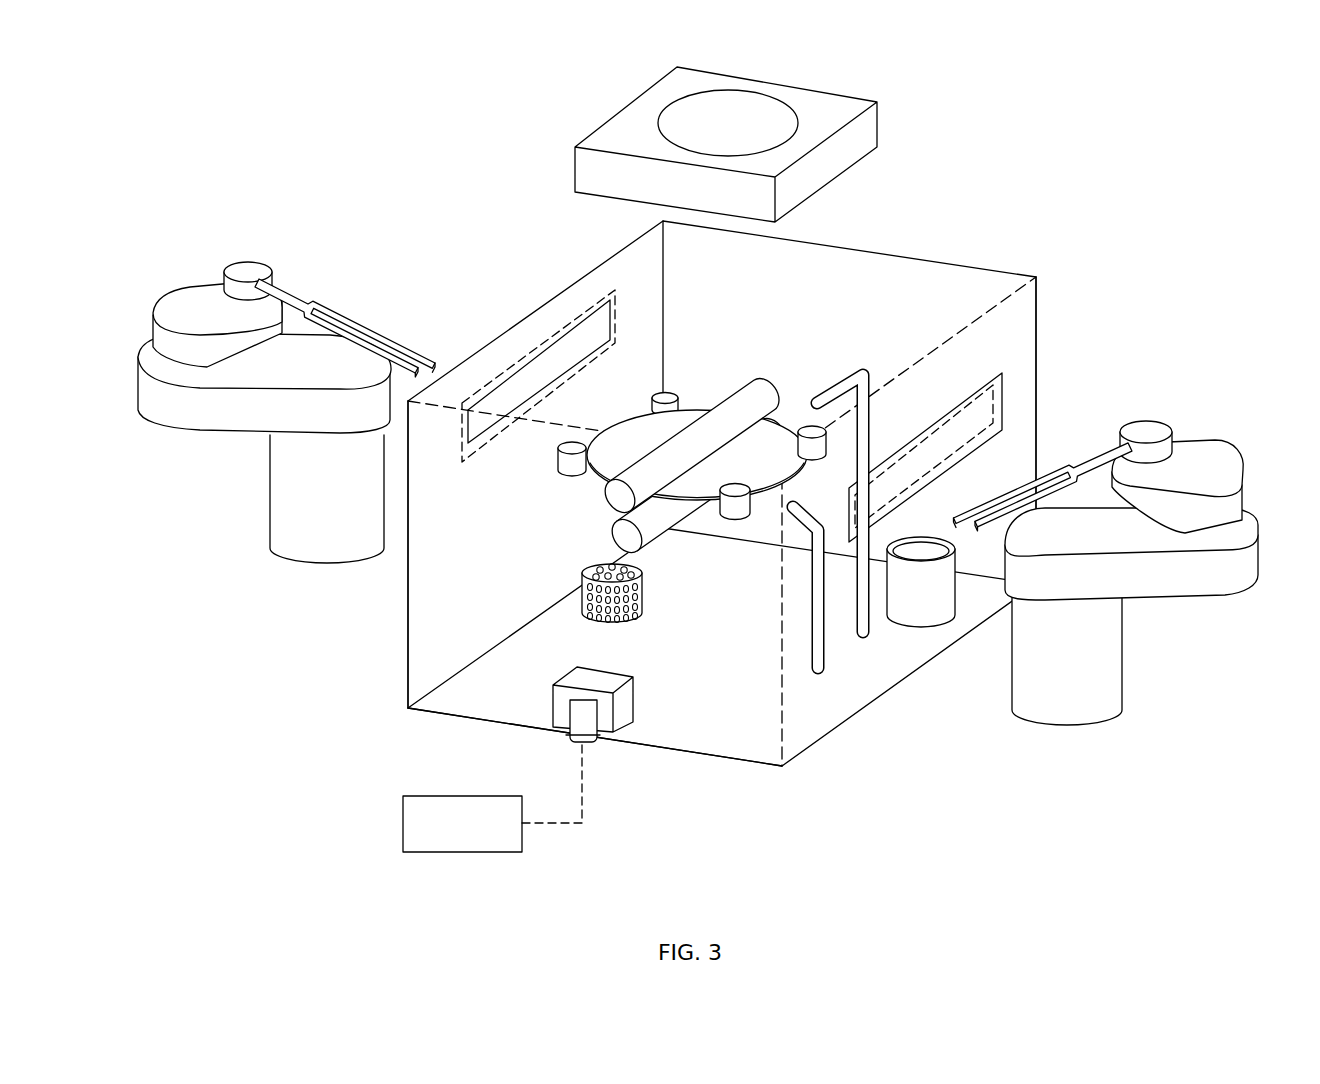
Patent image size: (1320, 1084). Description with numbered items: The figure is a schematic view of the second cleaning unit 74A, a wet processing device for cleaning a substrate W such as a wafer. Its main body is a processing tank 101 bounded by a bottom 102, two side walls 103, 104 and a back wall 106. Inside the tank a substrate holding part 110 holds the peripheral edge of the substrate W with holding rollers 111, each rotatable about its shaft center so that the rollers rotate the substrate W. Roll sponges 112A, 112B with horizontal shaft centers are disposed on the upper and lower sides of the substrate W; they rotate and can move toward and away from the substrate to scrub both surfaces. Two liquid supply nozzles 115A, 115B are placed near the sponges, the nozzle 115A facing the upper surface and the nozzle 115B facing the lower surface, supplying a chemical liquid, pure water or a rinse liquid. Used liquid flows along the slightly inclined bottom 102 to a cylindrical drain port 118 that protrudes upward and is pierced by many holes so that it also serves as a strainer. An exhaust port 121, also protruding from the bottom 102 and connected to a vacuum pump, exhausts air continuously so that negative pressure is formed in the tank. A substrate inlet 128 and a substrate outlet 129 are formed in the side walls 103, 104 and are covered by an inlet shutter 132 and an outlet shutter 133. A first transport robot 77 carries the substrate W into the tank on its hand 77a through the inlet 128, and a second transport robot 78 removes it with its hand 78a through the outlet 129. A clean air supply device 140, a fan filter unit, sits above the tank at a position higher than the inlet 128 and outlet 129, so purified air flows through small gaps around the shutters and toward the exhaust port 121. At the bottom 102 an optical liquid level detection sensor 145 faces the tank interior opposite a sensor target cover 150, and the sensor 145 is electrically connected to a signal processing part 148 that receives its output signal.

The second cleaning unit 74A is at (493, 158).
The clean air supply device 140 is at (630, 98).
The processing tank 101 is at (908, 237).
The back wall 106 is at (932, 278).
The first transport robot 77 is at (212, 303).
The hand 77a is at (402, 333).
The second transport robot 78 is at (1186, 472).
The hand 78a is at (1050, 468).
The substrate inlet 128 is at (573, 327).
The inlet shutter 132 is at (513, 365).
The substrate outlet 129 is at (952, 412).
The outlet shutter 133 is at (1008, 402).
The substrate W is at (625, 416).
The substrate holding part 110 is at (557, 487).
The holding rollers 111 is at (678, 392).
The roll sponge 112A is at (722, 386).
The roll sponge 112B is at (667, 550).
The liquid supply nozzle 115A is at (833, 388).
The liquid supply nozzle 115B is at (806, 513).
The drain port 118 is at (583, 567).
The exhaust port 121 is at (932, 537).
The side wall 103 is at (408, 620).
The side wall 104 is at (870, 684).
The bottom 102 is at (722, 738).
The sensor target cover 150 is at (625, 702).
The optical liquid level detection sensor 145 is at (583, 740).
The signal processing part 148 is at (403, 822).